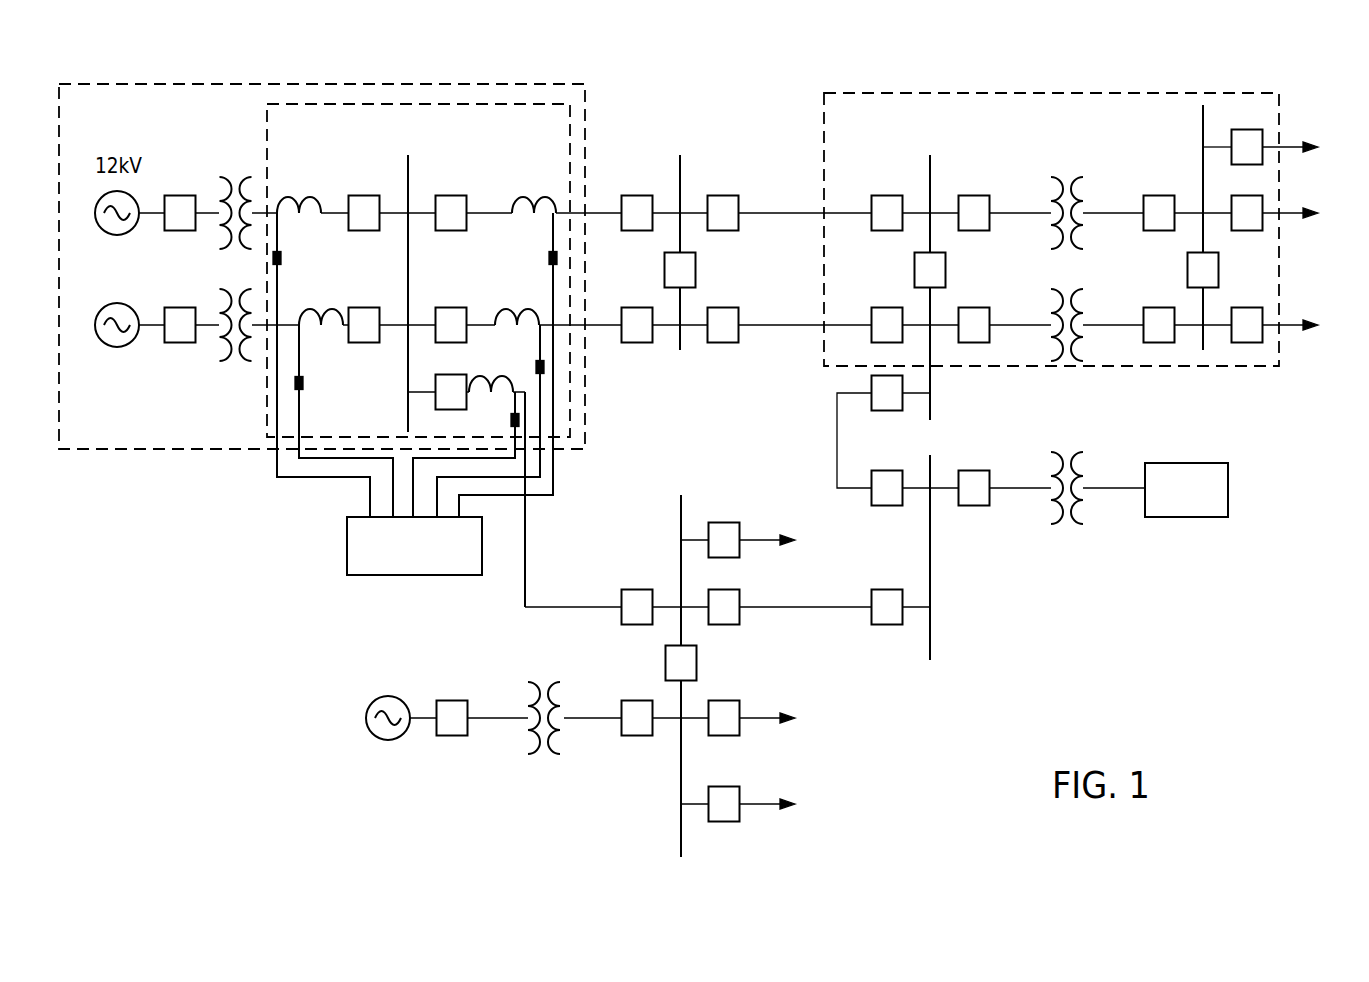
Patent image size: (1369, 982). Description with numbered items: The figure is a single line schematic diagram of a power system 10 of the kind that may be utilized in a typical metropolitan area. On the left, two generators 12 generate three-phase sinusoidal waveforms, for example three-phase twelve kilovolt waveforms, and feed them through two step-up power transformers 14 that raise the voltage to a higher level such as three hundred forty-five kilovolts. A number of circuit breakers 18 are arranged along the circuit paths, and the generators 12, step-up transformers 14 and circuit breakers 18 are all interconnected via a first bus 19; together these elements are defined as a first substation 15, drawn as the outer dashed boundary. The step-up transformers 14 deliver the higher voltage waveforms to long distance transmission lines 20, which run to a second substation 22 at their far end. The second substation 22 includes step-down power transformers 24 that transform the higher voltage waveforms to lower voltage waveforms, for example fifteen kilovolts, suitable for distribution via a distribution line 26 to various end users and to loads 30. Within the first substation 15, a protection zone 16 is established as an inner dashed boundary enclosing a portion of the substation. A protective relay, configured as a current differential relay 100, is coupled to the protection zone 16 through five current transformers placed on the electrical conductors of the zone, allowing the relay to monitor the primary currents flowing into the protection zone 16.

The power system 10 is at (748, 106).
The generator 12 is at (118, 236).
The step-up power transformer 14 is at (235, 172).
The first substation 15 is at (298, 83).
The protection zone 16 is at (570, 158).
The circuit breaker 18 is at (450, 232).
The first bus 19 is at (407, 170).
The transmission line 20 is at (602, 213).
The second substation 22 is at (1100, 93).
The step-down power transformer 24 is at (1065, 175).
The distribution line 26 is at (1292, 150).
The load 30 is at (1229, 488).
The current differential relay 100 is at (347, 546).